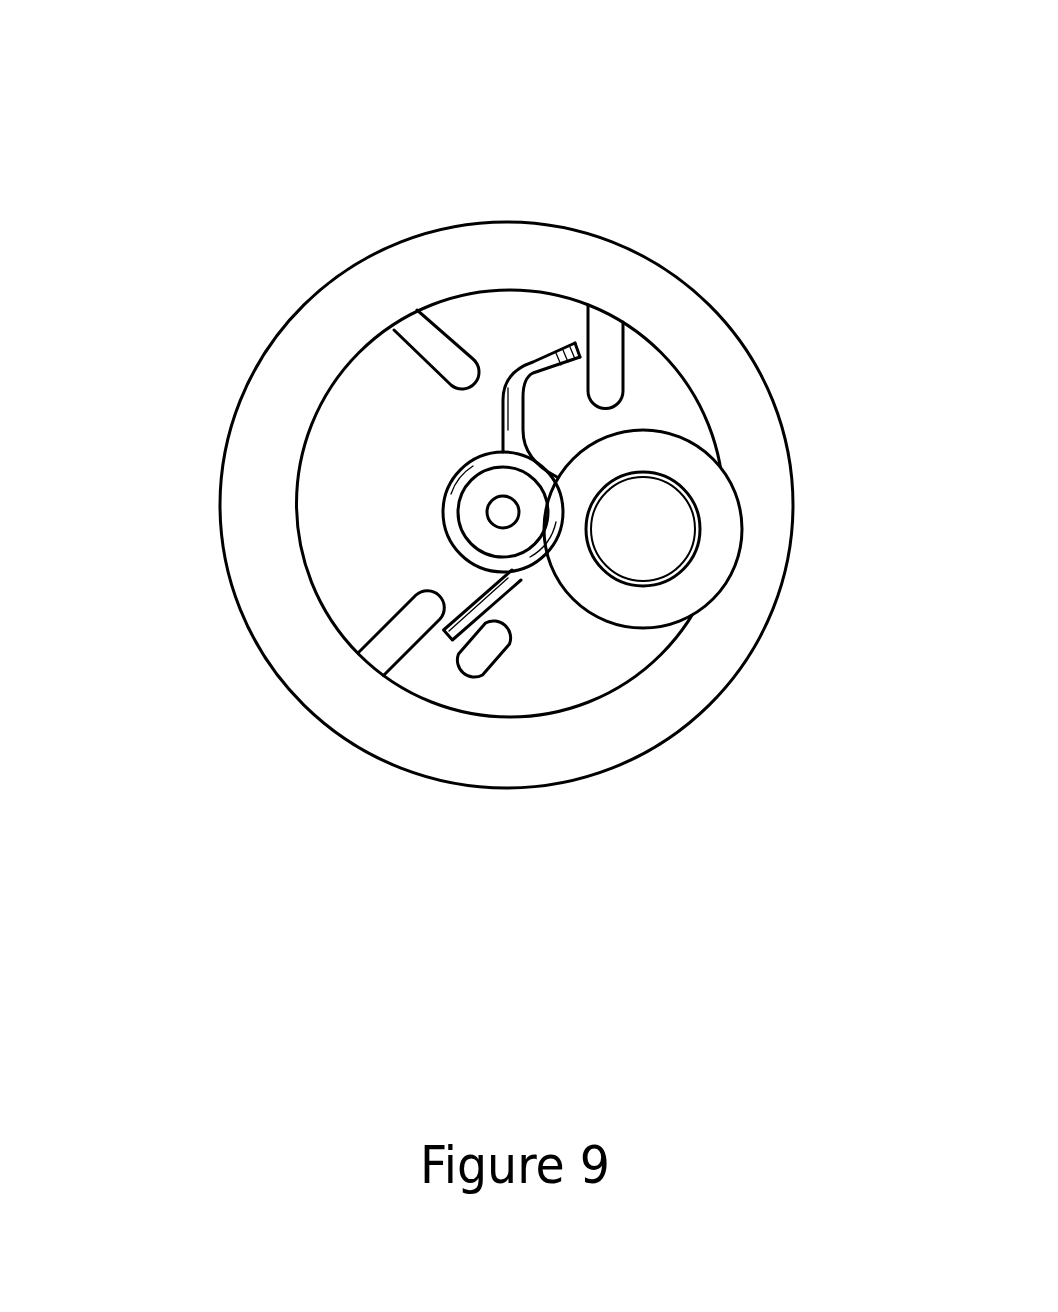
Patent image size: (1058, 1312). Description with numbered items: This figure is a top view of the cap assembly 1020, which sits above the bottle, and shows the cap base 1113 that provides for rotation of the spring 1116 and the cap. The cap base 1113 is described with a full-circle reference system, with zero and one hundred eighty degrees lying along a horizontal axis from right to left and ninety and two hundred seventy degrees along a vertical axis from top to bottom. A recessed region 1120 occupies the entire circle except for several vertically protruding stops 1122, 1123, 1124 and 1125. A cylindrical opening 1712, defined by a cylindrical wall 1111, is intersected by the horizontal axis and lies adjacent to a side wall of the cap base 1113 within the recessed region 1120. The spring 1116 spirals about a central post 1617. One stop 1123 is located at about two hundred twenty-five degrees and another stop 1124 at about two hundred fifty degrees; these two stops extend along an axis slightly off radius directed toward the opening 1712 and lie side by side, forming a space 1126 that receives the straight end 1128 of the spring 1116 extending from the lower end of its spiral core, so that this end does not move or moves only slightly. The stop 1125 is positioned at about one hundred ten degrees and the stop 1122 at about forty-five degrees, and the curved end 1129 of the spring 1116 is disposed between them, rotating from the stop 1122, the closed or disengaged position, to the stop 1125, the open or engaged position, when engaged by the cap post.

The cap assembly 1020 is at (178, 148).
The cylindrical wall 1111 is at (675, 578).
The cap base 1113 is at (640, 284).
The spring 1116 is at (447, 510).
The recessed region 1120 is at (385, 428).
The stop 1122 is at (607, 360).
The stop 1123 is at (393, 642).
The stop 1124 is at (475, 663).
The stop 1125 is at (433, 350).
The space 1126 is at (422, 667).
The straight end of spring 1128 is at (498, 588).
The curved end of spring 1129 is at (537, 362).
The central post 1617 is at (502, 485).
The cylindrical opening 1712 is at (645, 523).